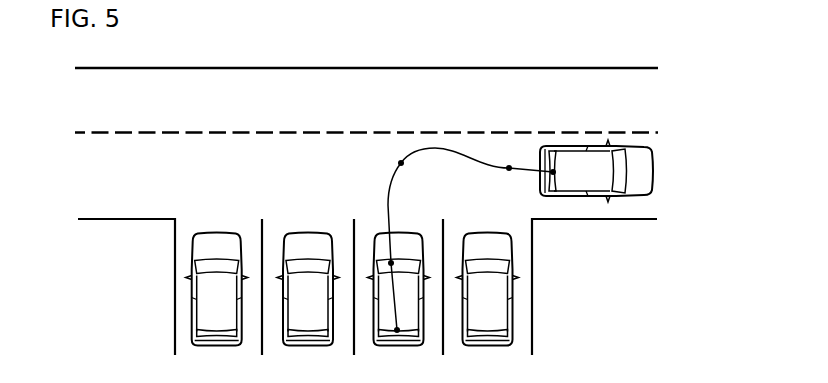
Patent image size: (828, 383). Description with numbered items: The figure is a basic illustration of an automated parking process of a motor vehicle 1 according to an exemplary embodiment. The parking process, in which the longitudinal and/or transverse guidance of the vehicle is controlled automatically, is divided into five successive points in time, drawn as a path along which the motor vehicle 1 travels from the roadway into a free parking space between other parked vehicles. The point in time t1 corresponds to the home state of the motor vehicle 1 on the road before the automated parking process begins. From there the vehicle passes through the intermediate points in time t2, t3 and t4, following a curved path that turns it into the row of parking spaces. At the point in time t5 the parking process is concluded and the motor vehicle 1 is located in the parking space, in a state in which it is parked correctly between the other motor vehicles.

The motor vehicle 1 is at (590, 170).
The point in time t1 is at (562, 172).
The point in time t2 is at (507, 179).
The point in time t3 is at (410, 169).
The point in time t4 is at (400, 252).
The point in time t5 is at (400, 349).